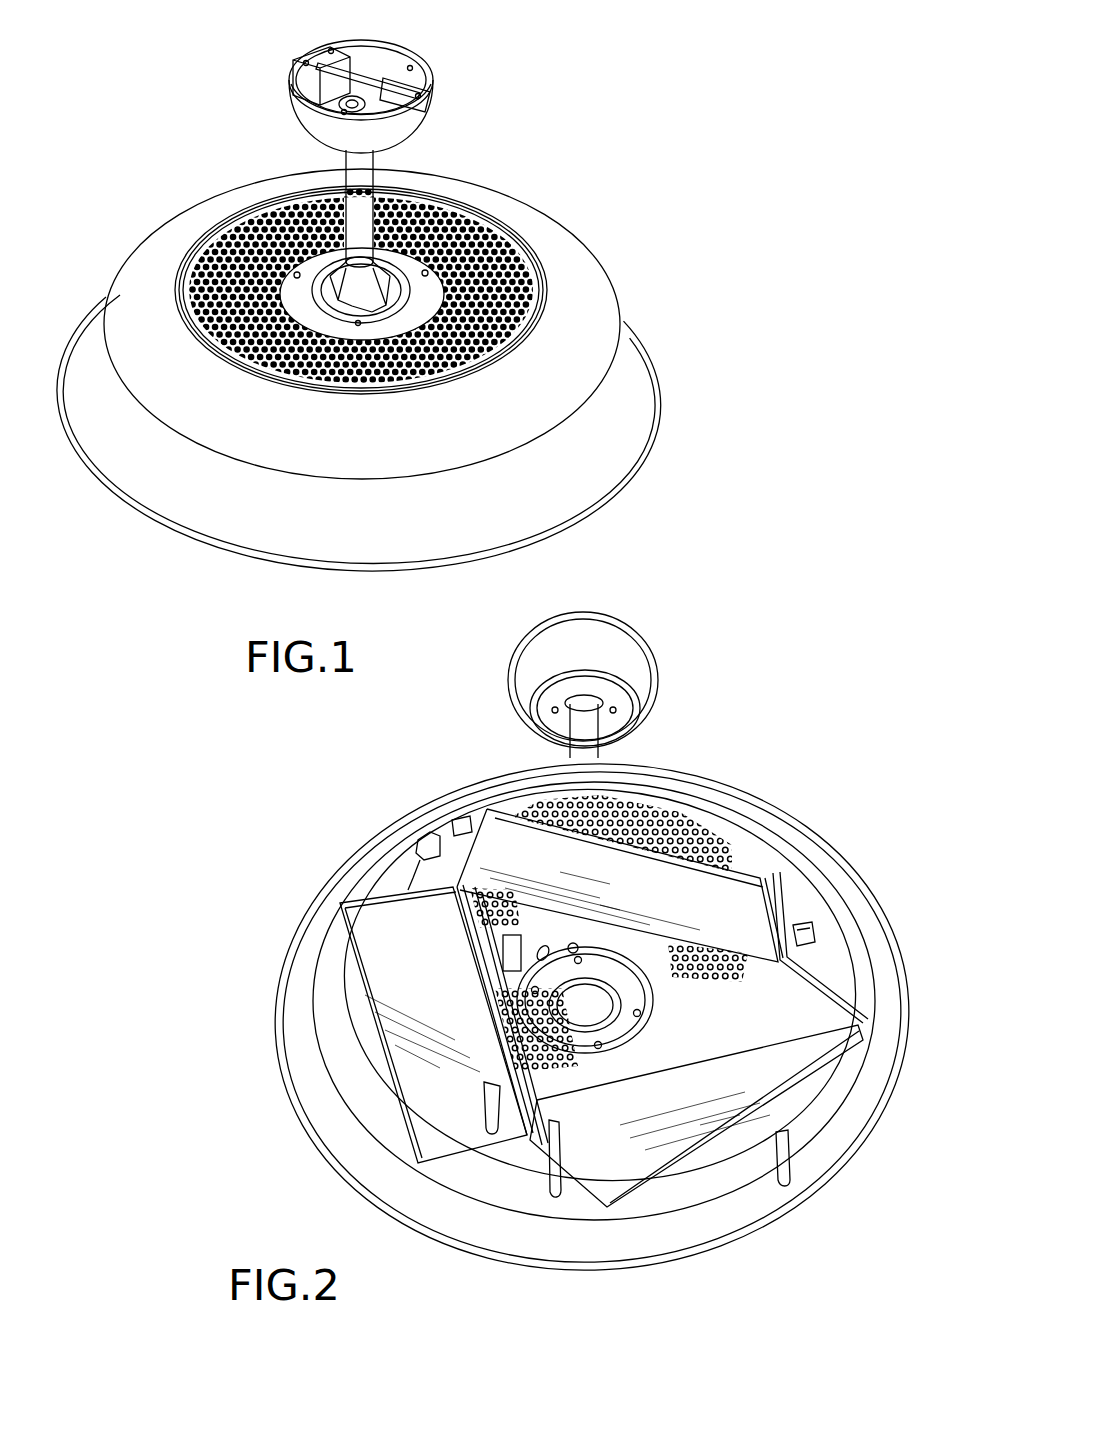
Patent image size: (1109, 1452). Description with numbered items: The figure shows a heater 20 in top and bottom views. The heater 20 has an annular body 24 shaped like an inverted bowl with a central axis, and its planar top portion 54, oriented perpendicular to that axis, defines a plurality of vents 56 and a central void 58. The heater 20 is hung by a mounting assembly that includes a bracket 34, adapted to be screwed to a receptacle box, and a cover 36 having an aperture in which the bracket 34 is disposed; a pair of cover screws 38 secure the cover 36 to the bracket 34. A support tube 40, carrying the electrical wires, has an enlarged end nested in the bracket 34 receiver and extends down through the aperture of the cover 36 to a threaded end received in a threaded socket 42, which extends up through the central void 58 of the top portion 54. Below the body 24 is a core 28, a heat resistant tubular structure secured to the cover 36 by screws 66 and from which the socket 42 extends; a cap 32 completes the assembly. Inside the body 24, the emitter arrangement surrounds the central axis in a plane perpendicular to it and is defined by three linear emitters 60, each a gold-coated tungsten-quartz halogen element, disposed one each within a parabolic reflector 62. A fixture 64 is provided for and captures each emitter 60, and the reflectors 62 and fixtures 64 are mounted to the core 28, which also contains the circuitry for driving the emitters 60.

In FIG. 1, the heater 20 is at (724, 121).
In FIG. 1, the body 24 is at (138, 293).
In FIG. 2, the core 28 is at (645, 934).
In FIG. 2, the cap 32 is at (617, 1020).
In FIG. 1, the bracket 34 is at (370, 105).
In FIG. 1, the cover 36 is at (300, 112).
In FIG. 2, the cover 36 is at (553, 660).
In FIG. 2, the cover screws 38 is at (553, 712).
In FIG. 1, the support tube 40 is at (362, 197).
In FIG. 1, the socket 42 is at (330, 275).
In FIG. 1, the planar top portion 54 is at (412, 293).
In FIG. 1, the vents 56 is at (499, 214).
In FIG. 1, the central void 58 is at (497, 333).
In FIG. 2, the linear emitters 60 is at (602, 855).
In FIG. 2, the parabolic reflector 62 is at (797, 893).
In FIG. 2, the fixture 64 is at (813, 943).
In FIG. 1, the screws 66 is at (354, 325).